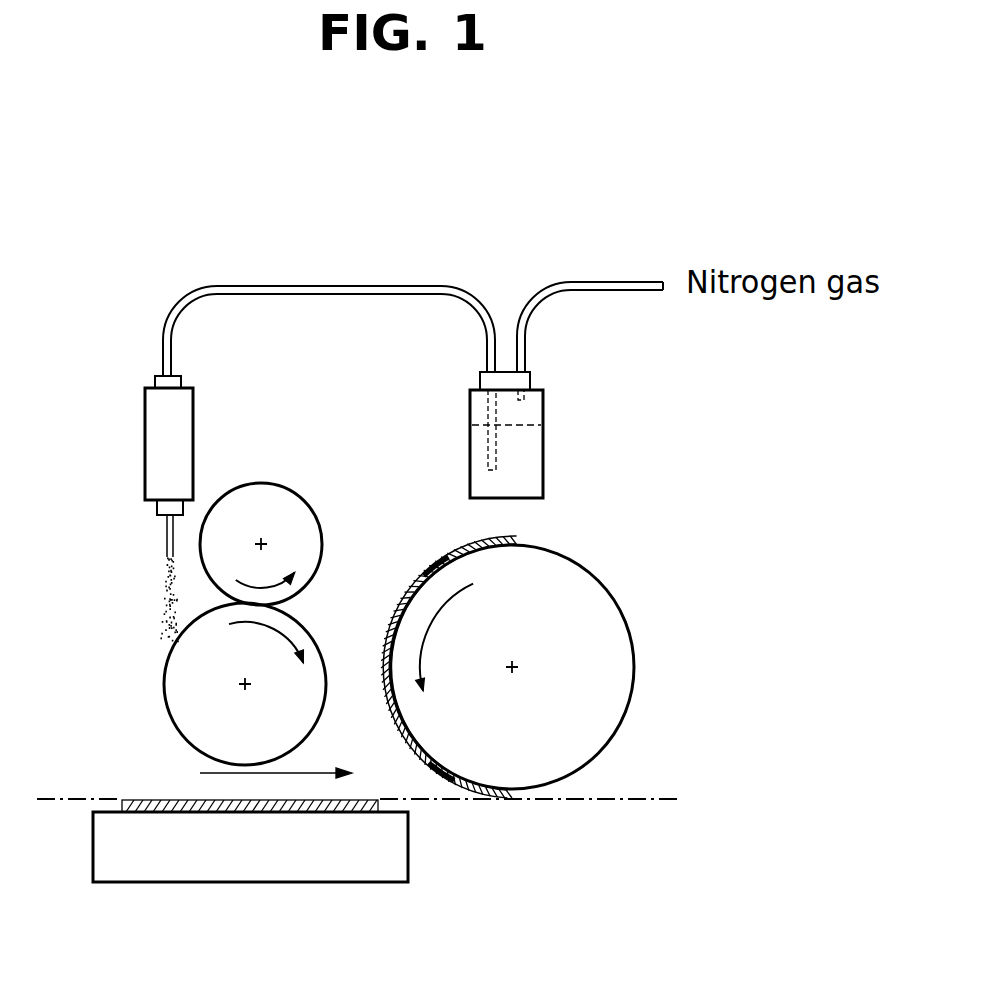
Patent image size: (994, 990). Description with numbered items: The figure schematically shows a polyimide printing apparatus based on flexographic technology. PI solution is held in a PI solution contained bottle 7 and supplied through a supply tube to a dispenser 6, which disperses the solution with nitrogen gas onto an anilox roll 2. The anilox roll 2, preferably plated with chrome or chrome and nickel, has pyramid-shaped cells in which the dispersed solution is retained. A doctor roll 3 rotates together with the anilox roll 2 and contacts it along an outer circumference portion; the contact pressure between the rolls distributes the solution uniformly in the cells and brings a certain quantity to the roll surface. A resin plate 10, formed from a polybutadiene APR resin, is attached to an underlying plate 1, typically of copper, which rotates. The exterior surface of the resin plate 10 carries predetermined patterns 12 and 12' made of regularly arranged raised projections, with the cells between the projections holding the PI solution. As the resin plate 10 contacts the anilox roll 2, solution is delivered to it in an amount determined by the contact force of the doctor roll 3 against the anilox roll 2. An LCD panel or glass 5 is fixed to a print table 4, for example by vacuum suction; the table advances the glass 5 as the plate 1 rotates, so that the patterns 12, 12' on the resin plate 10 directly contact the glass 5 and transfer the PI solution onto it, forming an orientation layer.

The underlying plate 1 is at (612, 602).
The anilox roll 2 is at (163, 690).
The doctor roll 3 is at (283, 490).
The print table 4 is at (250, 884).
The LCD panel or glass 5 is at (150, 800).
The dispenser 6 is at (145, 446).
The PI solution contained bottle 7 is at (545, 443).
The resin plate 10 is at (508, 545).
The pattern 12 is at (409, 536).
The pattern 12' is at (454, 834).